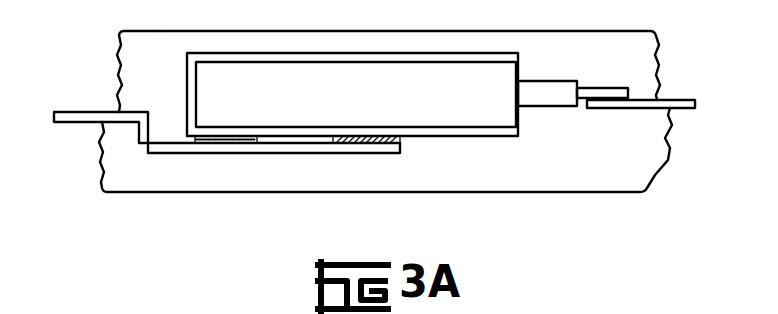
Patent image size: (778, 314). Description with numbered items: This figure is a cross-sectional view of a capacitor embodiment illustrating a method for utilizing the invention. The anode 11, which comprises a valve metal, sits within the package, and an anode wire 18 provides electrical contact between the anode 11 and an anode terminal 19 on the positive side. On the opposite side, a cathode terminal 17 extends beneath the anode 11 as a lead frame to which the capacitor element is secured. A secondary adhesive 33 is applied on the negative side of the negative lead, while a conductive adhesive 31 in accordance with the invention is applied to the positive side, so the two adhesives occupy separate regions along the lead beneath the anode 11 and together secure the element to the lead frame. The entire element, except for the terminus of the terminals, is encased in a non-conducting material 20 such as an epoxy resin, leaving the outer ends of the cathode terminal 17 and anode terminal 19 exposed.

The anode 11 is at (283, 95).
The cathode terminal 17 is at (75, 123).
The anode wire 18 is at (618, 87).
The anode terminal 19 is at (682, 110).
The non-conducting material 20 is at (577, 155).
The conductive adhesive 31 is at (363, 143).
The secondary adhesive 33 is at (215, 143).